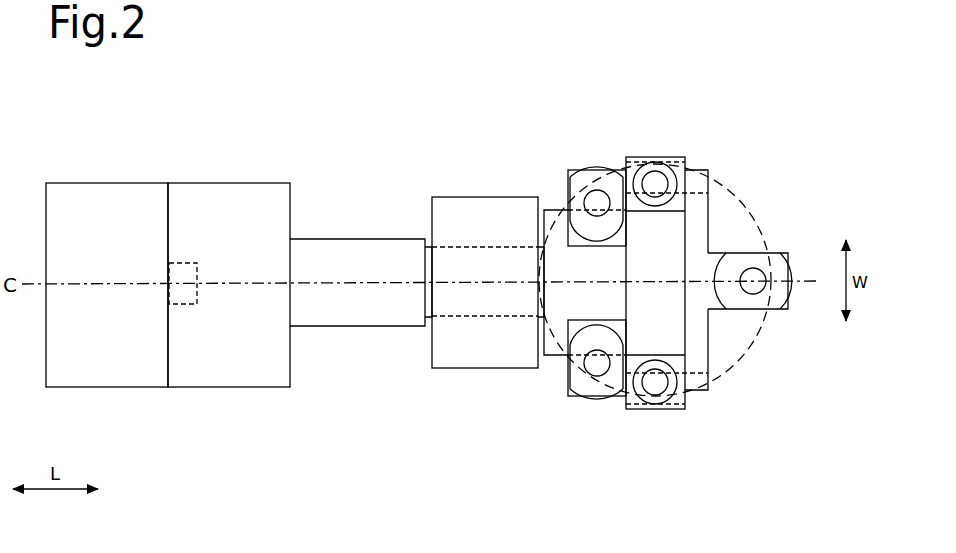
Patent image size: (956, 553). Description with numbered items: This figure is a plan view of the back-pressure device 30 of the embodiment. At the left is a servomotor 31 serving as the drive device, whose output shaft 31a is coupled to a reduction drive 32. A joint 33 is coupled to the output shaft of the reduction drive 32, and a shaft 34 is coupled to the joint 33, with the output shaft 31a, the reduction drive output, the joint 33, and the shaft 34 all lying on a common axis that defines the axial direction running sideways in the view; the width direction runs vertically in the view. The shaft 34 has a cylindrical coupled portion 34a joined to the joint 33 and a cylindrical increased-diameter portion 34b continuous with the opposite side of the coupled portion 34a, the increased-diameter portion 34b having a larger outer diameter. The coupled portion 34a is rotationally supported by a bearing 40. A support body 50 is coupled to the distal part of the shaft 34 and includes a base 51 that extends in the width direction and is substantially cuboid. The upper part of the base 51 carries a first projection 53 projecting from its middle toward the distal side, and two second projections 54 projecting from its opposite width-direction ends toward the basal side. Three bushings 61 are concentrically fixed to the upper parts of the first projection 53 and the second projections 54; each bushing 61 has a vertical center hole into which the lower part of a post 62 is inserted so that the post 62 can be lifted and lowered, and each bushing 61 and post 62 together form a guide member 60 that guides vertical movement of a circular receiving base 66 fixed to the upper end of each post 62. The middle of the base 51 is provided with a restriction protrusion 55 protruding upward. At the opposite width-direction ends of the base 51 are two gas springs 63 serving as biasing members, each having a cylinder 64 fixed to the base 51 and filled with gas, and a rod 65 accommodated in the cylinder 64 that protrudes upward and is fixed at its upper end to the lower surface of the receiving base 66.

The back-pressure device 30 is at (785, 108).
The servomotor 31 is at (70, 388).
The output shaft 31a is at (183, 306).
The reduction drive 32 is at (193, 388).
The joint 33 is at (349, 327).
The shaft 34 is at (464, 352).
The coupled portion 34a is at (456, 317).
The increased-diameter portion 34b is at (537, 340).
The bearing 40 is at (467, 196).
The support body 50 is at (699, 282).
The base 51 is at (649, 290).
The first projection 53 is at (752, 312).
The second projection 54 is at (568, 188).
The restriction protrusion 55 is at (690, 222).
The guide member 60 is at (718, 283).
The bushing 61 is at (573, 167).
The post 62 is at (709, 282).
The gas spring 63 is at (677, 282).
The cylinder 64 is at (650, 162).
The rod 65 is at (645, 90).
The receiving base 66 is at (765, 174).